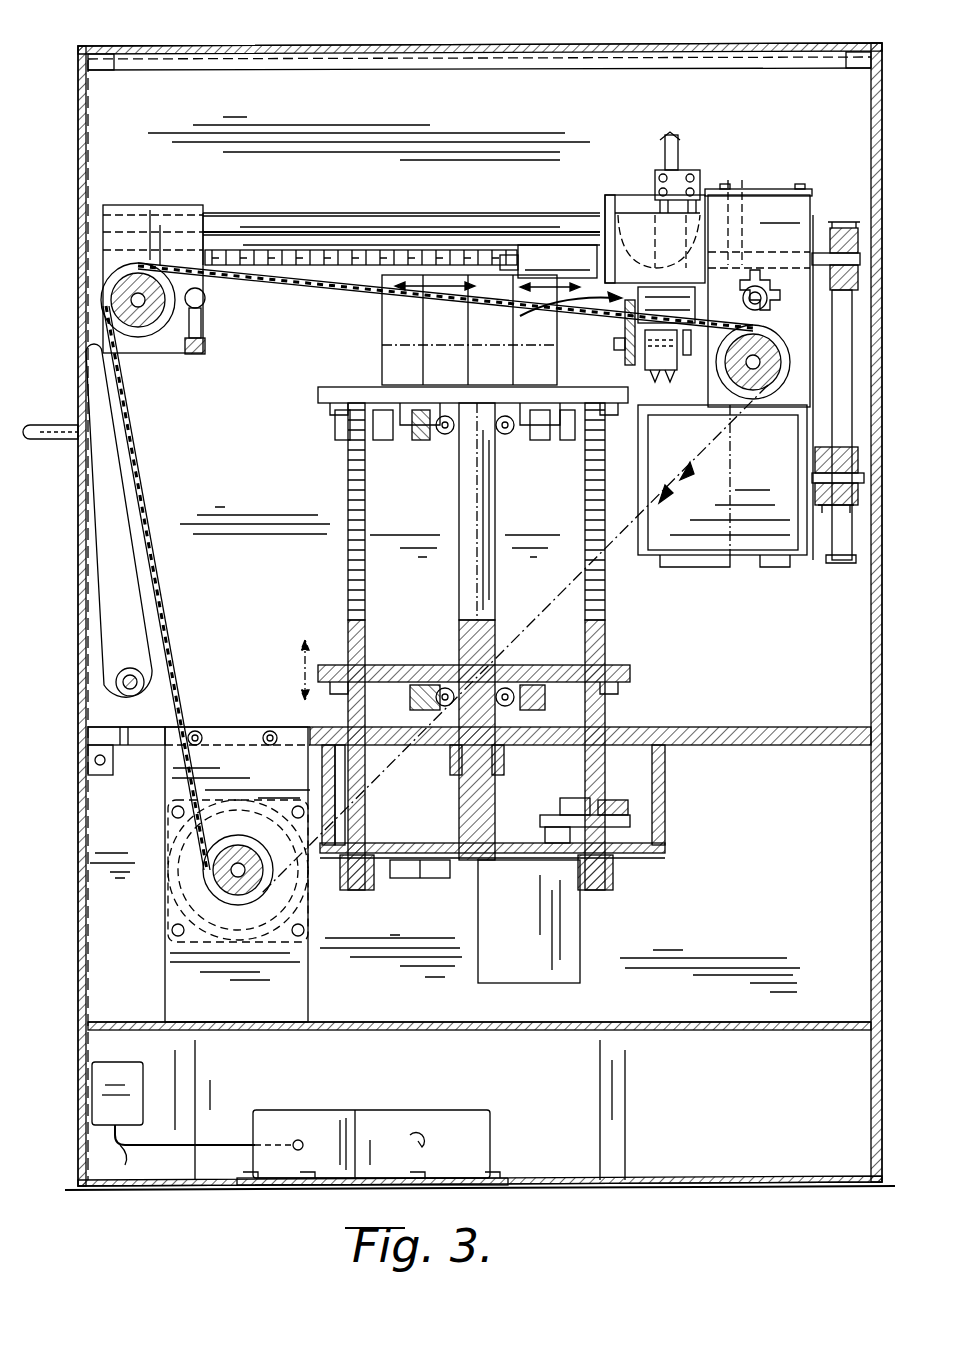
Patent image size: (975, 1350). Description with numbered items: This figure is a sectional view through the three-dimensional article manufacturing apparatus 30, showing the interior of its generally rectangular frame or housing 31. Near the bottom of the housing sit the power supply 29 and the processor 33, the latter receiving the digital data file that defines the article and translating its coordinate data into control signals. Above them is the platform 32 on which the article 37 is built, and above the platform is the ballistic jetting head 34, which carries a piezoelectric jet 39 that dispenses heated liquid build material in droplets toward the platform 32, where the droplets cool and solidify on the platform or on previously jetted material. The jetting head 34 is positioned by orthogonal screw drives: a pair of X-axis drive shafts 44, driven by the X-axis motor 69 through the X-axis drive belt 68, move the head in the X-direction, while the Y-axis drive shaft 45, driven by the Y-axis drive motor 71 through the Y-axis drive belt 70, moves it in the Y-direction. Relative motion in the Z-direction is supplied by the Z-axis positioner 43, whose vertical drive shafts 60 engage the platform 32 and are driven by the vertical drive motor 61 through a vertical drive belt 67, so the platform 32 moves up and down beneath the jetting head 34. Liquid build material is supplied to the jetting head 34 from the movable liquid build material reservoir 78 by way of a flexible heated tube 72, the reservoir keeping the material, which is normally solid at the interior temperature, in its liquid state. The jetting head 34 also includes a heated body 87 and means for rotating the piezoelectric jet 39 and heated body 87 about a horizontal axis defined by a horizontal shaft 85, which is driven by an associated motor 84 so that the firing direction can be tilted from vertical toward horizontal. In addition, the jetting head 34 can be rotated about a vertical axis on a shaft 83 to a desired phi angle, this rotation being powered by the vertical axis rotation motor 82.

The power supply 29 is at (115, 1062).
The three-dimensional article manufacturing apparatus 30 is at (526, 38).
The frame or housing 31 is at (705, 48).
The platform 32 is at (350, 360).
The processor 33 is at (450, 1110).
The ballistic jetting head 34 is at (540, 300).
The article 37 is at (375, 315).
The piezoelectric jet 39 is at (692, 375).
The Z-axis positioner 43 is at (650, 905).
The X-axis drive shafts 44 is at (148, 340).
The Y-axis drive shaft 45 is at (430, 250).
The vertical drive shafts 60 is at (368, 822).
The vertical drive motor 61 is at (565, 945).
The vertical drive belt 67 is at (502, 815).
The X-axis drive belt 68 is at (170, 590).
The X-axis motor 69 is at (188, 955).
The Y-axis drive belt 70 is at (815, 420).
The Y-axis drive motor 71 is at (685, 555).
The flexible heated tube 72 is at (685, 148).
The liquid build material reservoir 78 is at (830, 555).
The vertical axis rotation motor 82 is at (642, 210).
The shaft 83 is at (612, 194).
The motor 84 is at (632, 305).
The horizontal shaft 85 is at (614, 345).
The heated body 87 is at (590, 420).